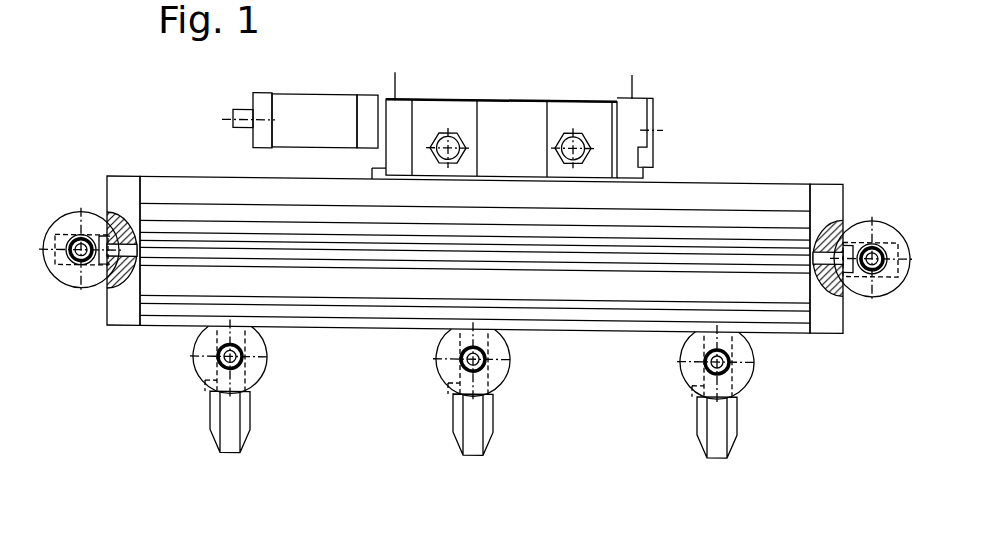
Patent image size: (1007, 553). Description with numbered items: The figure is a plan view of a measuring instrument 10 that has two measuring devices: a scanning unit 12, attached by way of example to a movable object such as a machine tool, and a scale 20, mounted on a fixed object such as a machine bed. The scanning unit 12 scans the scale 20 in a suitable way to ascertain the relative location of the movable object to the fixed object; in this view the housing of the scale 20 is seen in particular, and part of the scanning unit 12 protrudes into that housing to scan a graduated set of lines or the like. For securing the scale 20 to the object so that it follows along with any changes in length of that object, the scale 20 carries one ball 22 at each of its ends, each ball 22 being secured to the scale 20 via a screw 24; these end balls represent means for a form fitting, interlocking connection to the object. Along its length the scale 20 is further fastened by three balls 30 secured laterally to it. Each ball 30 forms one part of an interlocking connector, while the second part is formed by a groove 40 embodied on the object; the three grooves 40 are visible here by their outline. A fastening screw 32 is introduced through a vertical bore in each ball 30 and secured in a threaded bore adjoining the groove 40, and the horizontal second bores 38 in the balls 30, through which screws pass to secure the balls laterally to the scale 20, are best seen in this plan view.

The measuring instrument 10 is at (709, 95).
The scanning unit 12 is at (503, 116).
The scale 20 is at (722, 187).
The ball 22 is at (67, 281).
The screw 24 is at (110, 204).
The ball 30 is at (258, 371).
The fastening screw 32 is at (246, 343).
The second bore 38 is at (198, 381).
The groove 40 is at (220, 432).